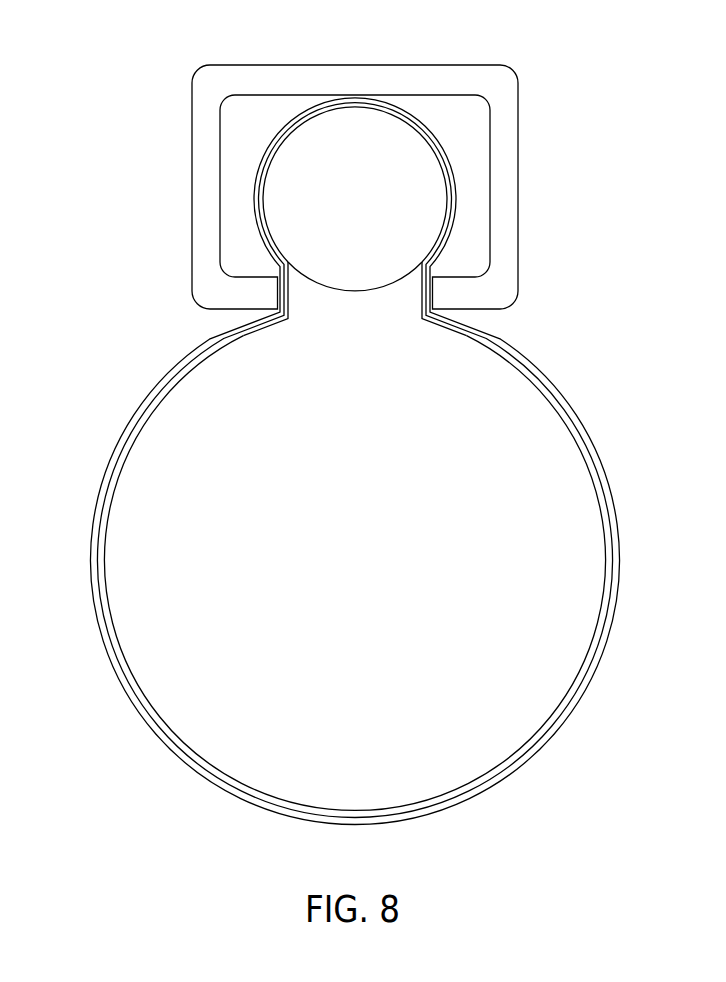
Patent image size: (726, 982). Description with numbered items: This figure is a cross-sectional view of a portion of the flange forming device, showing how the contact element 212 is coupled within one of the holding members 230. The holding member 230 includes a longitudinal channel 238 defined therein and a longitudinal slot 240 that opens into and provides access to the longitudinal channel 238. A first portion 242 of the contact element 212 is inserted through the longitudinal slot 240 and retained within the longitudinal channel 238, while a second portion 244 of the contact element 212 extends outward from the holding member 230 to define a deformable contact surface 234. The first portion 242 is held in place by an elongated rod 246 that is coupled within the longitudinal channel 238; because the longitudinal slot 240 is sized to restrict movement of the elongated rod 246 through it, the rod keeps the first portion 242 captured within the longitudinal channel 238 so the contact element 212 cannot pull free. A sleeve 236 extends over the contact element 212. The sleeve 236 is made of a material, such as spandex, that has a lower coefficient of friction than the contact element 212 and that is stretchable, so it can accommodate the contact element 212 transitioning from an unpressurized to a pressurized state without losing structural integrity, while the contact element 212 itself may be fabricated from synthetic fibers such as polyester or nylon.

The holding member 230 is at (552, 55).
The longitudinal channel 238 is at (449, 110).
The first portion 242 is at (463, 163).
The elongated rod 246 is at (334, 291).
The contact element 212 is at (623, 363).
The sleeve 236 is at (620, 552).
The deformable contact surface 234 is at (482, 792).
The second portion 244 is at (548, 338).
The longitudinal slot 240 is at (395, 310).